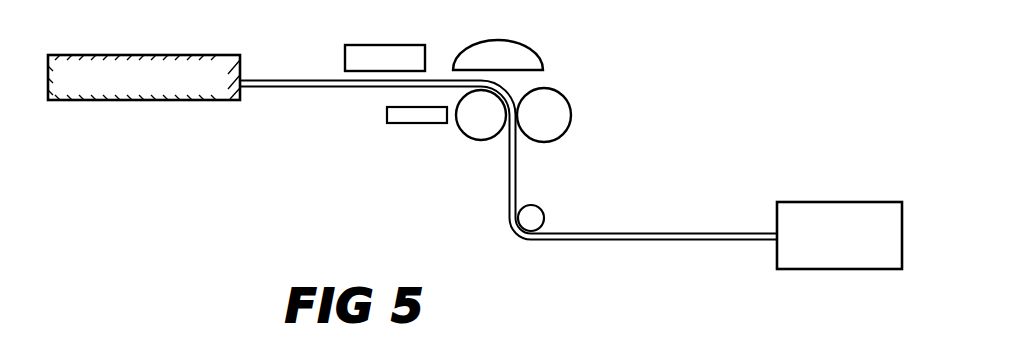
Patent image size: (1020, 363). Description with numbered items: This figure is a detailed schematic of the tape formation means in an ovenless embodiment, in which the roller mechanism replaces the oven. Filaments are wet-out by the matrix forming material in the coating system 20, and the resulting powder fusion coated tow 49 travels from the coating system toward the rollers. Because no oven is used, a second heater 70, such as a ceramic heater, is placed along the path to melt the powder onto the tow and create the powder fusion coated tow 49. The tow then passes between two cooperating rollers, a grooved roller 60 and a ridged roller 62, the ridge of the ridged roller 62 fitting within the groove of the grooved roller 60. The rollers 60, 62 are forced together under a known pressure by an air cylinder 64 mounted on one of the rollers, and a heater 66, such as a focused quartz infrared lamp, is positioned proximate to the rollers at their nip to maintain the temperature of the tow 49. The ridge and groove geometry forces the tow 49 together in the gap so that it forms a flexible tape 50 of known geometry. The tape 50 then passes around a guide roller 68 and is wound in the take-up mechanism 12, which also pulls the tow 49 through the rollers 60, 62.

The take-up mechanism 12 is at (842, 202).
The coating system 20 is at (134, 55).
The powder fusion coated tow 49 is at (295, 78).
The tape 50 is at (519, 174).
The grooved roller 60 is at (466, 143).
The ridged roller 62 is at (573, 112).
The air cylinder 64 is at (385, 120).
The heater 66 is at (543, 52).
The guide roller 68 is at (547, 217).
The second heater 70 is at (387, 45).